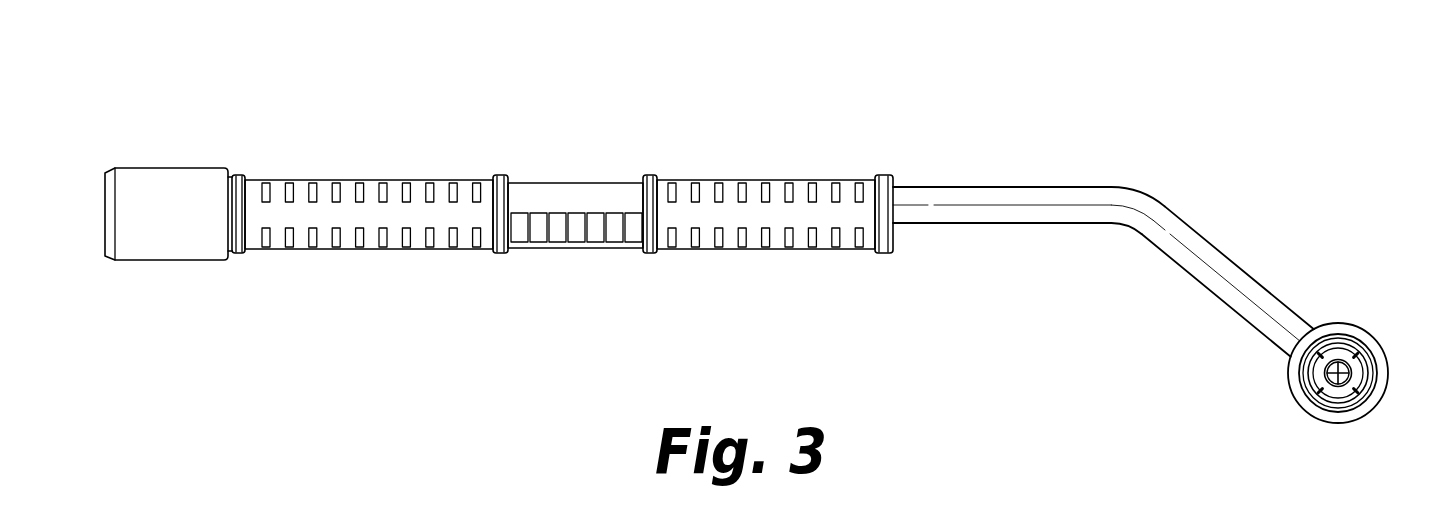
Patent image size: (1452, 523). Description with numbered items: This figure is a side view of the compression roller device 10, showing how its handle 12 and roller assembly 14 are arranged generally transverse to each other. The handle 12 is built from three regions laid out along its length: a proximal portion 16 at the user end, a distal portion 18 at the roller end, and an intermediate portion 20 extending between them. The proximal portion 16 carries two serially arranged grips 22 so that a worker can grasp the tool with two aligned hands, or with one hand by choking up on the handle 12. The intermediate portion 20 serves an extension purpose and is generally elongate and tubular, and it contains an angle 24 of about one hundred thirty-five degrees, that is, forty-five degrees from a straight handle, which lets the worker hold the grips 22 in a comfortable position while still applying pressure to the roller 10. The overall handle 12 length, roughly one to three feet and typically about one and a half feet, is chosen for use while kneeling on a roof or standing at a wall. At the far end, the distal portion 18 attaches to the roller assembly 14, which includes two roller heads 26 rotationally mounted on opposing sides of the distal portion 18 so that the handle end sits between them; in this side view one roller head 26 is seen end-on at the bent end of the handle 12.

The compression roller device 10 is at (1040, 95).
The handle 12 is at (948, 148).
The roller assembly 14 is at (1394, 301).
The proximal portion 16 is at (250, 142).
The distal portion 18 is at (1258, 376).
The intermediate portion 20 is at (964, 268).
The grips 22 is at (402, 162).
The angle 24 is at (1120, 250).
The roller heads 26 is at (1393, 407).